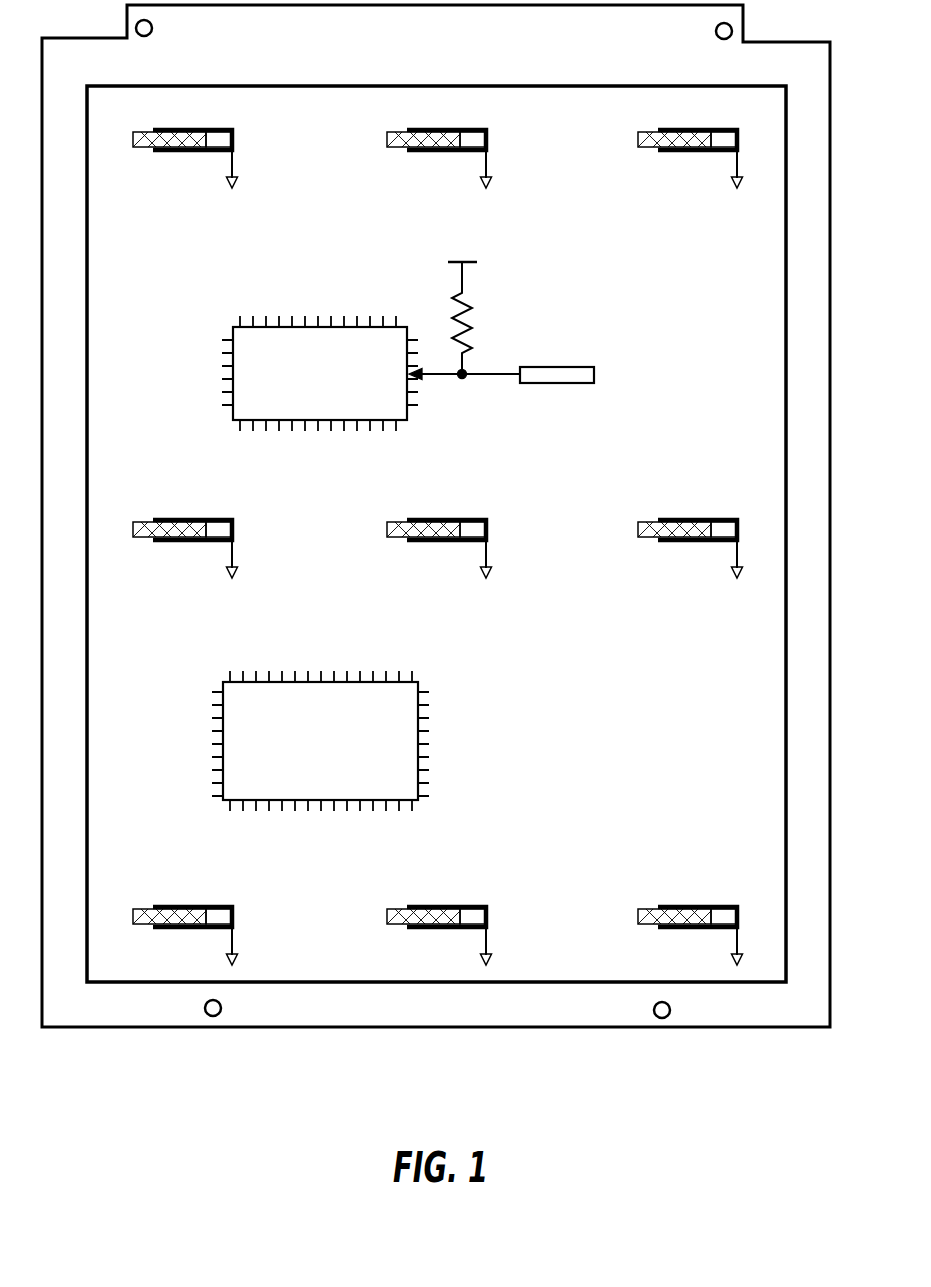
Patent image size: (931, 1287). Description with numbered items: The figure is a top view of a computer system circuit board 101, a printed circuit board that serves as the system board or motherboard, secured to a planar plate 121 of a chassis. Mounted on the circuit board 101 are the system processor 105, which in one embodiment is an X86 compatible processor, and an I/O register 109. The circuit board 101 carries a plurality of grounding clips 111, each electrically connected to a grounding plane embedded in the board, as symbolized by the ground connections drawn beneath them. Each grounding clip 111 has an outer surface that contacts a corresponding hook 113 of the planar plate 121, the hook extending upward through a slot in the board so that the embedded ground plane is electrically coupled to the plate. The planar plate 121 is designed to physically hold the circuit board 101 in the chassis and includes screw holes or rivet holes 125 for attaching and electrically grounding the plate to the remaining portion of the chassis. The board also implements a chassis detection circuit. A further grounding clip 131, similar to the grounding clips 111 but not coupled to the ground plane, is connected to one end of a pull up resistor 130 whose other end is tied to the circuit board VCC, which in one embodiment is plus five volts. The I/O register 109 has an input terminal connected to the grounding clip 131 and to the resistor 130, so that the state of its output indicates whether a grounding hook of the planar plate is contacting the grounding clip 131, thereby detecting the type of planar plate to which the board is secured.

The circuit board 101 is at (764, 862).
The system processor 105 is at (423, 712).
The I/O register 109 is at (313, 325).
The grounding clip 111 is at (215, 128).
The hook 113 is at (145, 147).
The planar plate 121 is at (743, 1028).
The screw holes or rivet holes 125 is at (218, 1015).
The pull up resistor 130 is at (466, 295).
The grounding clip 131 is at (577, 367).